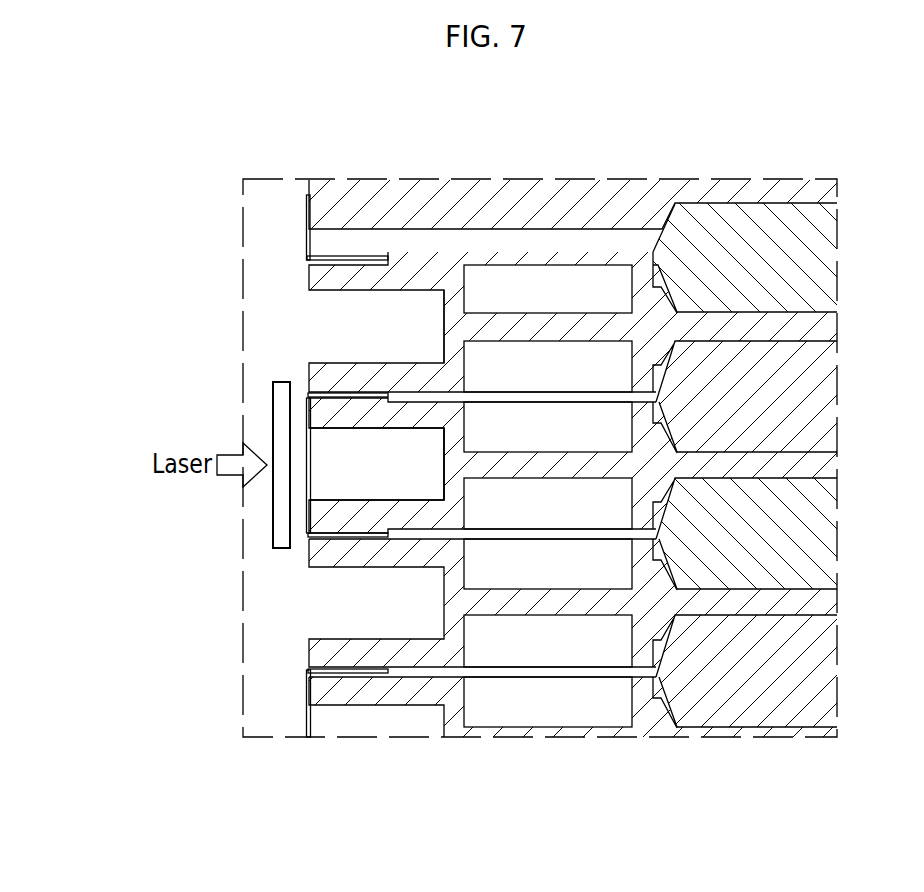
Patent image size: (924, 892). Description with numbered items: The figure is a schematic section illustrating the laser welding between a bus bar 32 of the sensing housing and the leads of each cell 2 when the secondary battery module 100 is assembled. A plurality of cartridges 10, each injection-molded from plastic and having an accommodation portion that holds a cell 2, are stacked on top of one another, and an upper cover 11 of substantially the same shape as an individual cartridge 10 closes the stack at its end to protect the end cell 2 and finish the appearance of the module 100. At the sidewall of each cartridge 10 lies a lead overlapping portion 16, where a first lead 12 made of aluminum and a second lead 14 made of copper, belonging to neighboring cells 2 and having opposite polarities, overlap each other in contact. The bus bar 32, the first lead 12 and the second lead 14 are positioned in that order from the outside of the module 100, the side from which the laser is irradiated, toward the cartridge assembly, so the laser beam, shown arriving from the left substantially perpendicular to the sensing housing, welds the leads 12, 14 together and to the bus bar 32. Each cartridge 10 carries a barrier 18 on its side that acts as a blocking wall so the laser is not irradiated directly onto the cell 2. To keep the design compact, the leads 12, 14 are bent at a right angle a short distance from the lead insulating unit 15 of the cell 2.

The cell 2 is at (843, 248).
The cartridge 10 is at (300, 276).
The upper cover 11 is at (454, 190).
The first lead 12 is at (318, 540).
The second lead 14 is at (318, 392).
The lead insulating unit 15 is at (312, 259).
The lead overlapping portion 16 is at (324, 461).
The barrier 18 is at (444, 316).
The bus bar 32 is at (284, 380).
The secondary battery module 100 is at (481, 785).